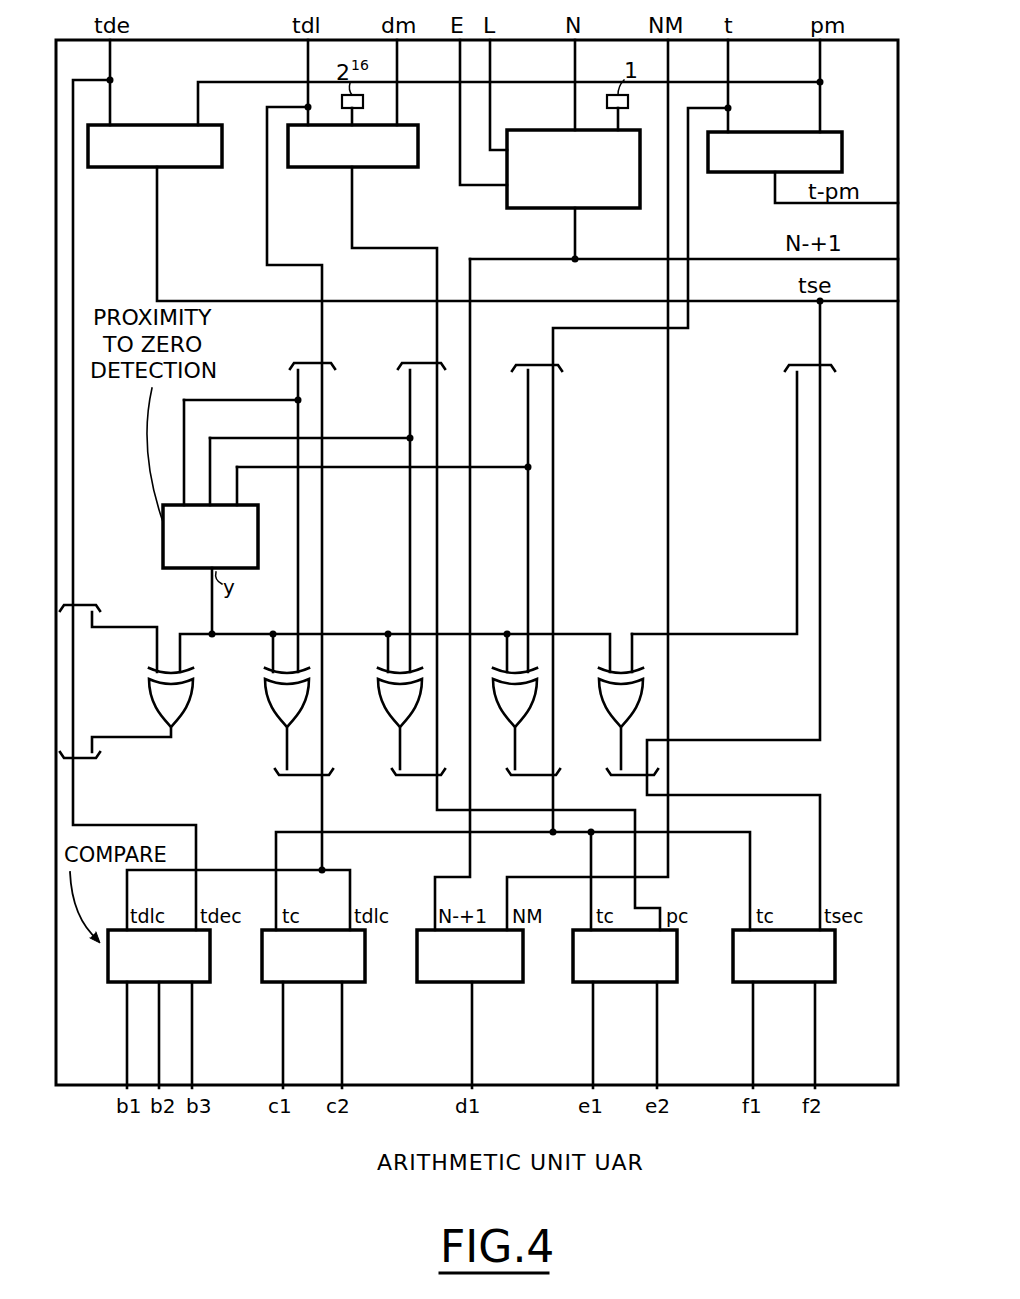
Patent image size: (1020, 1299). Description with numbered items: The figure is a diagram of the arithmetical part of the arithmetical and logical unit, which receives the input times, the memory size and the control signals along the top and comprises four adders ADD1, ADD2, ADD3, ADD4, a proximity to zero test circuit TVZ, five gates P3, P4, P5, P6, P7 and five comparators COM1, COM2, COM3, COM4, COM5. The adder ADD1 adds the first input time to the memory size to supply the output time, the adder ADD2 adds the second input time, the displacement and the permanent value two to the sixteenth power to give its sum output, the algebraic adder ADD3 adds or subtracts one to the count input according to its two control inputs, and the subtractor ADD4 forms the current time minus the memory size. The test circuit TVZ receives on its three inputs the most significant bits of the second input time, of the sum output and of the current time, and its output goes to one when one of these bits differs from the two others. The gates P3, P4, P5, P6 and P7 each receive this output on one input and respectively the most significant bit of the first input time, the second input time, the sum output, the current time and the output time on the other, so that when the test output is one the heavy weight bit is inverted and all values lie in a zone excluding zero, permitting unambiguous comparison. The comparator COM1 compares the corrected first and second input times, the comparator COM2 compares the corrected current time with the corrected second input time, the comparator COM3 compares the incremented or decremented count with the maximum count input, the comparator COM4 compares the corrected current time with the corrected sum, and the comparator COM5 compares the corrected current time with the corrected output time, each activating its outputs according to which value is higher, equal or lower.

The arithmetical adder ADD1 is at (155, 146).
The arithmetical adder ADD2 is at (353, 146).
The algebraic adder ADD3 is at (573, 169).
The arithmetical subtractor ADD4 is at (775, 152).
The proximity to zero test circuit TVZ is at (210, 536).
The OR-exclusive gate P3 is at (160, 697).
The OR-exclusive gate P4 is at (284, 693).
The OR-exclusive gate P5 is at (398, 694).
The OR-exclusive gate P6 is at (508, 697).
The OR-exclusive gate P7 is at (615, 697).
The comparator COM1 is at (159, 956).
The comparator COM2 is at (313, 956).
The comparator COM3 is at (470, 956).
The comparator COM4 is at (625, 956).
The comparator COM5 is at (784, 956).